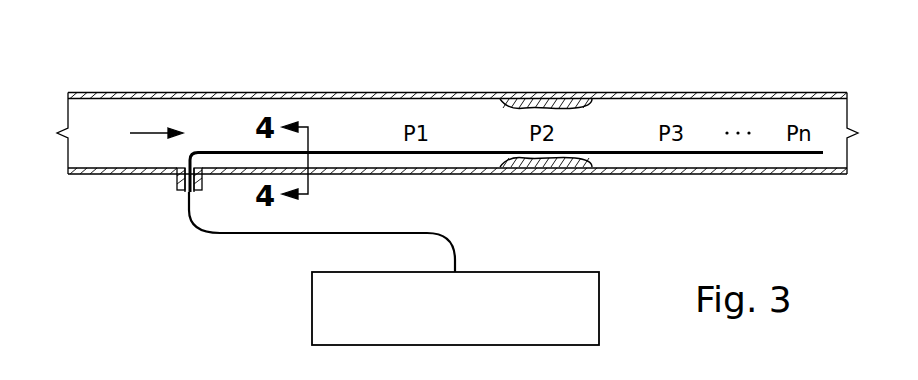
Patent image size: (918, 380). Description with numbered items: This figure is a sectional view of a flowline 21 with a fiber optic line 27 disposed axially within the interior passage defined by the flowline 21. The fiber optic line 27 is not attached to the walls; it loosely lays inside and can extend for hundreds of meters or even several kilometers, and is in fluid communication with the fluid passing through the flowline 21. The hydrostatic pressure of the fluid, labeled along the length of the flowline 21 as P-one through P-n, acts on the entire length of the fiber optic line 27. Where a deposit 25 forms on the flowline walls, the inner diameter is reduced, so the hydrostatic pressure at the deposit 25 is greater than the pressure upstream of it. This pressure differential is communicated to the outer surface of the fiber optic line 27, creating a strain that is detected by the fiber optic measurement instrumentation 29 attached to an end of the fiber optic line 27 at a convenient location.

The pipe 21 is at (333, 92).
The deposit 25 is at (513, 112).
The fiber optic line 27 is at (240, 152).
The fiber optic measurement instrumentation 29 is at (312, 307).